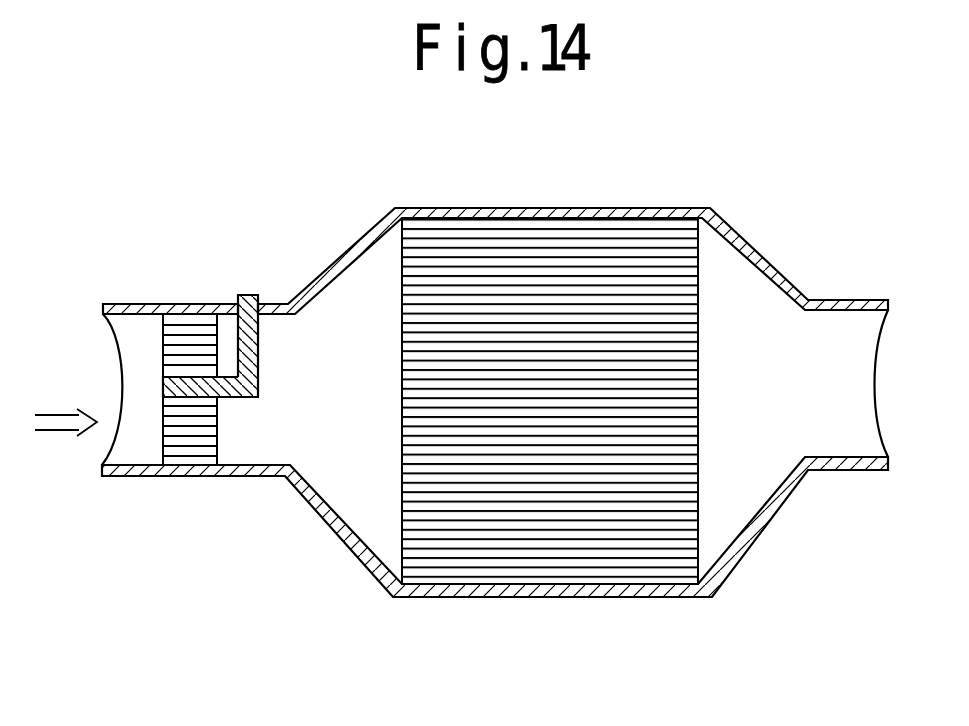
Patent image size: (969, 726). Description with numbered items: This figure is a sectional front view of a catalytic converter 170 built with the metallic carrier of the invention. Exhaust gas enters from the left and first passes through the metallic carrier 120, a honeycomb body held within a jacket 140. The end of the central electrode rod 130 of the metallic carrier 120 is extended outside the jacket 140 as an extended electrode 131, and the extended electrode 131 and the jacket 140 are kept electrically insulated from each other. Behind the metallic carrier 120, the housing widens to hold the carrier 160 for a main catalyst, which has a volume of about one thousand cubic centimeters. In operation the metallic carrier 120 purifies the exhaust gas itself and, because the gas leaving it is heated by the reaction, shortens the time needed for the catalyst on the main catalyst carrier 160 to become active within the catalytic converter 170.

The metallic carrier 120 is at (184, 315).
The central electrode rod 130 is at (167, 384).
The extended electrode 131 is at (250, 296).
The jacket 140 is at (297, 482).
The carrier for a main catalyst 160 is at (543, 233).
The catalytic converter 170 is at (591, 608).